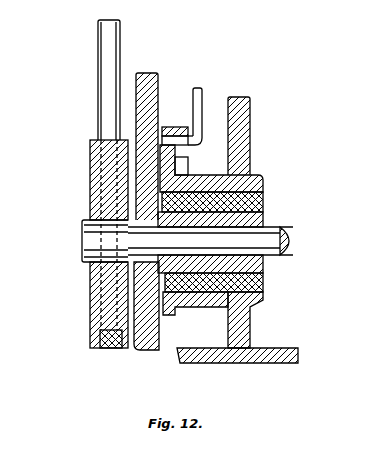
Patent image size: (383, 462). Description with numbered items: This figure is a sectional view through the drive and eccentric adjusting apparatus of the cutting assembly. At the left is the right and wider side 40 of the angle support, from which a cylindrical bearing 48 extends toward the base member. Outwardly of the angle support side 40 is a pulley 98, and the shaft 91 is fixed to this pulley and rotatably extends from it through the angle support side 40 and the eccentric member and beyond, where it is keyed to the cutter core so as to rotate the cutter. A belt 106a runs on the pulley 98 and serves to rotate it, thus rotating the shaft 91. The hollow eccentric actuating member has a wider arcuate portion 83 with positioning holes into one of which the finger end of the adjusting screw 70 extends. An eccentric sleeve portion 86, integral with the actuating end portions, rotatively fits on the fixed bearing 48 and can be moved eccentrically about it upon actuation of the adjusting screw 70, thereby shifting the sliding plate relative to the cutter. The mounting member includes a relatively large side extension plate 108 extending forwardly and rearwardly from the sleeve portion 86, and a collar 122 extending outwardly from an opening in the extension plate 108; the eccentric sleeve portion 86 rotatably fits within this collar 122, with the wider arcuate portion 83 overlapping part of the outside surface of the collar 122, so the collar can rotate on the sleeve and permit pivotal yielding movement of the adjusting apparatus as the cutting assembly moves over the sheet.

The belt 106a is at (106, 50).
The pulley 98 is at (90, 177).
The shaft 91 is at (92, 238).
The right and wider side 40 is at (139, 105).
The wider arcuate portion 83 is at (173, 127).
The adjusting screw 70 is at (198, 94).
The side extension plate 108 is at (250, 107).
The collar 122 is at (243, 182).
The eccentric sleeve portion 86 is at (256, 196).
The cylindrical bearing 48 is at (256, 218).